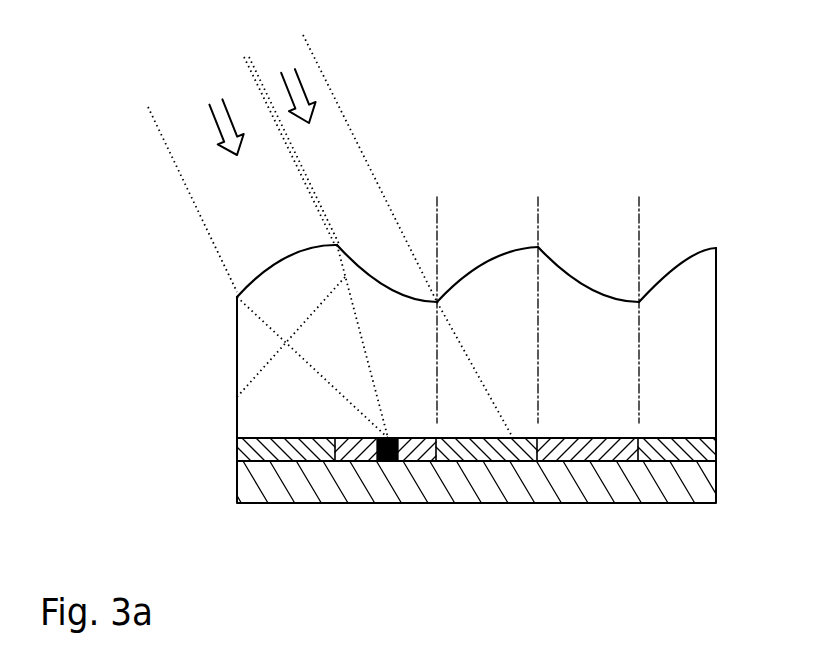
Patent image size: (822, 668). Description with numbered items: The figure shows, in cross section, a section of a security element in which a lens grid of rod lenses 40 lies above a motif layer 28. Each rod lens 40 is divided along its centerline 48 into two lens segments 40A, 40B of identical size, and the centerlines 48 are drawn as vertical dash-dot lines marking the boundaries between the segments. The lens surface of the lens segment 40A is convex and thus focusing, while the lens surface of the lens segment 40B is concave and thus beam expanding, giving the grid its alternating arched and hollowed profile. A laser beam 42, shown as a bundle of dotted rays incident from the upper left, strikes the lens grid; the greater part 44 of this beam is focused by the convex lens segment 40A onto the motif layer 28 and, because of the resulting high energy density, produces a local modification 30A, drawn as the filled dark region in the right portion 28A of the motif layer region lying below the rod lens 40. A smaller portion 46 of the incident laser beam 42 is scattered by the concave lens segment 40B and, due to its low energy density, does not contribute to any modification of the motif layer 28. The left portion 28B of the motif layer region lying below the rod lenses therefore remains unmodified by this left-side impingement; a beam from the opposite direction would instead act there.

The motif layer 28 is at (502, 520).
The right portion of the motif layer region 28A is at (353, 452).
The left portion of the motif layer region 28B is at (283, 450).
The local modification 30A is at (385, 462).
The rod lens 40 is at (476, 221).
The lens segment 40A is at (287, 268).
The lens segment 40B is at (392, 300).
The laser beam 42 is at (290, 29).
The focused part of the laser beam 44 is at (232, 157).
The smaller portion of the laser beam 46 is at (316, 127).
The centerline 48 is at (538, 372).